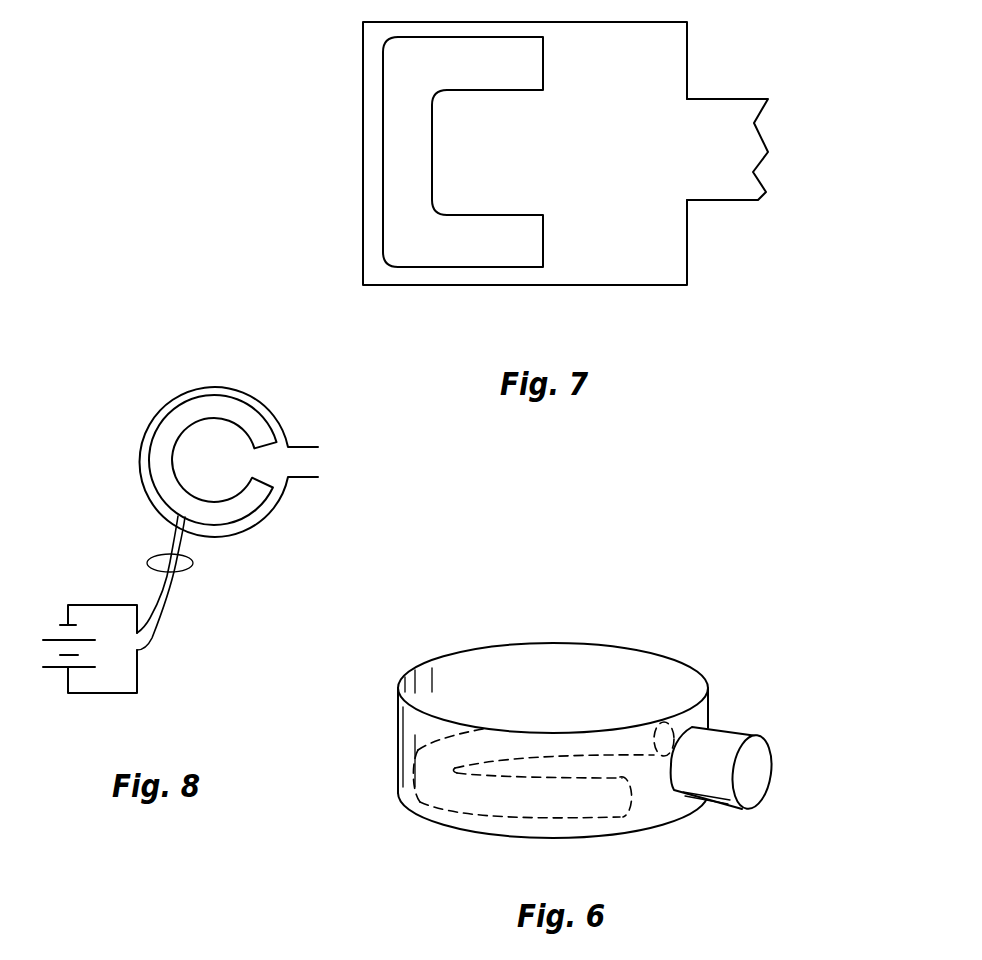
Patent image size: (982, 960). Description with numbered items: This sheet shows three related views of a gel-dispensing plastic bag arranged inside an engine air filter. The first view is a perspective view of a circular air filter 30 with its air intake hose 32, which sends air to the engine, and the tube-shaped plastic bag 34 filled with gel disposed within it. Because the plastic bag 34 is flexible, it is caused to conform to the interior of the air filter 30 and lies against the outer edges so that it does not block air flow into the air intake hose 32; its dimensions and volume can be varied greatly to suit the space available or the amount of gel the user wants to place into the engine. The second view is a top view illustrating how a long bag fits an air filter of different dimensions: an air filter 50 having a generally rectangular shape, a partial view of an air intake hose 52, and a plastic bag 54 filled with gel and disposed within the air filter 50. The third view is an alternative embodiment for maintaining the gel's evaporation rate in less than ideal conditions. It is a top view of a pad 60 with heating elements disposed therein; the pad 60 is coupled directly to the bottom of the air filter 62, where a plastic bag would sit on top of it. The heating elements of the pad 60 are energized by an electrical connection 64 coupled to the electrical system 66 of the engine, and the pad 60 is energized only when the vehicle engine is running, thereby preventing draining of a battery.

In FIG. 6, the air filter 30 is at (708, 680).
In FIG. 6, the air intake hose 32 is at (750, 782).
In FIG. 6, the plastic bag 34 is at (515, 800).
In FIG. 7, the air filter 50 is at (665, 70).
In FIG. 7, the air intake hose 52 is at (737, 165).
In FIG. 7, the plastic bag 54 is at (473, 241).
In FIG. 8, the pad 60 is at (250, 418).
In FIG. 8, the bottom of the air filter 62 is at (288, 432).
In FIG. 8, the electrical connection 64 is at (194, 566).
In FIG. 8, the electrical system 66 is at (88, 697).